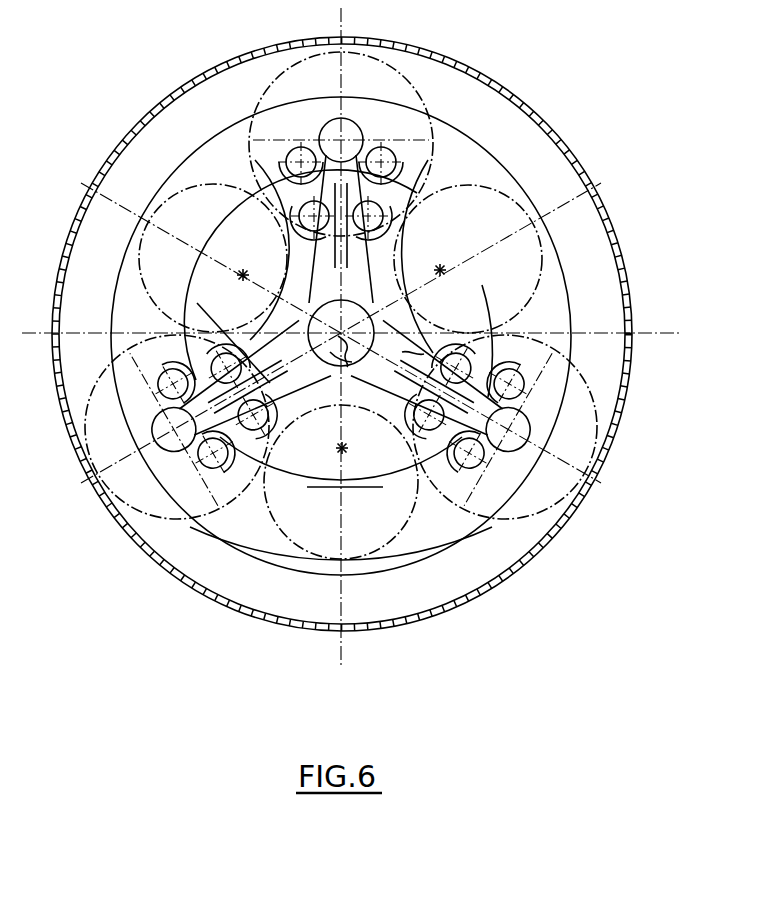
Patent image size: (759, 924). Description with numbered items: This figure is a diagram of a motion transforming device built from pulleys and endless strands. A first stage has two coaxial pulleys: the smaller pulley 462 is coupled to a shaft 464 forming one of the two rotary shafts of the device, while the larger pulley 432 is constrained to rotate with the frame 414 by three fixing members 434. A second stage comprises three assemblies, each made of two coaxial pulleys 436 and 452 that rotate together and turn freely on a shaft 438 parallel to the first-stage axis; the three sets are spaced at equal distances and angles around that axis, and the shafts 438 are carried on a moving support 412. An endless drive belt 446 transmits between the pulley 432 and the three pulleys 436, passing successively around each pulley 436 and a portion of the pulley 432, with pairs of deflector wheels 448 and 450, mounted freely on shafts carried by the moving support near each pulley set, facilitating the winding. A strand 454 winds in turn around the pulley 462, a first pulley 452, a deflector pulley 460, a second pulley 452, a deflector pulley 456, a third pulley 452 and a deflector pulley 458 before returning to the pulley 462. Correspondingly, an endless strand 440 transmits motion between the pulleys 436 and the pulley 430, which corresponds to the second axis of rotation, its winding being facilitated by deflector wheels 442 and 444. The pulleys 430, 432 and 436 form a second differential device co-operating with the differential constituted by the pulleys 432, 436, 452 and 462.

The moving support 412 is at (490, 162).
The frame 414 is at (612, 218).
The pulley 430 is at (364, 238).
The pulley 432 is at (324, 240).
The fixing members 434 is at (243, 280).
The pulley 436 is at (358, 128).
The shaft 438 is at (338, 130).
The endless strand 440 is at (414, 358).
The deflector wheel 442 is at (287, 234).
The deflector wheel 444 is at (341, 360).
The endless drive belt 446 is at (520, 336).
The deflector wheel 448 is at (292, 152).
The deflector wheel 450 is at (400, 160).
The pulley 452 is at (390, 70).
The strand 454 is at (324, 368).
The deflector pulley 456 is at (510, 190).
The deflector pulley 458 is at (300, 548).
The deflector pulley 460 is at (140, 262).
The pulley 462 is at (324, 306).
The shaft 464 is at (342, 366).